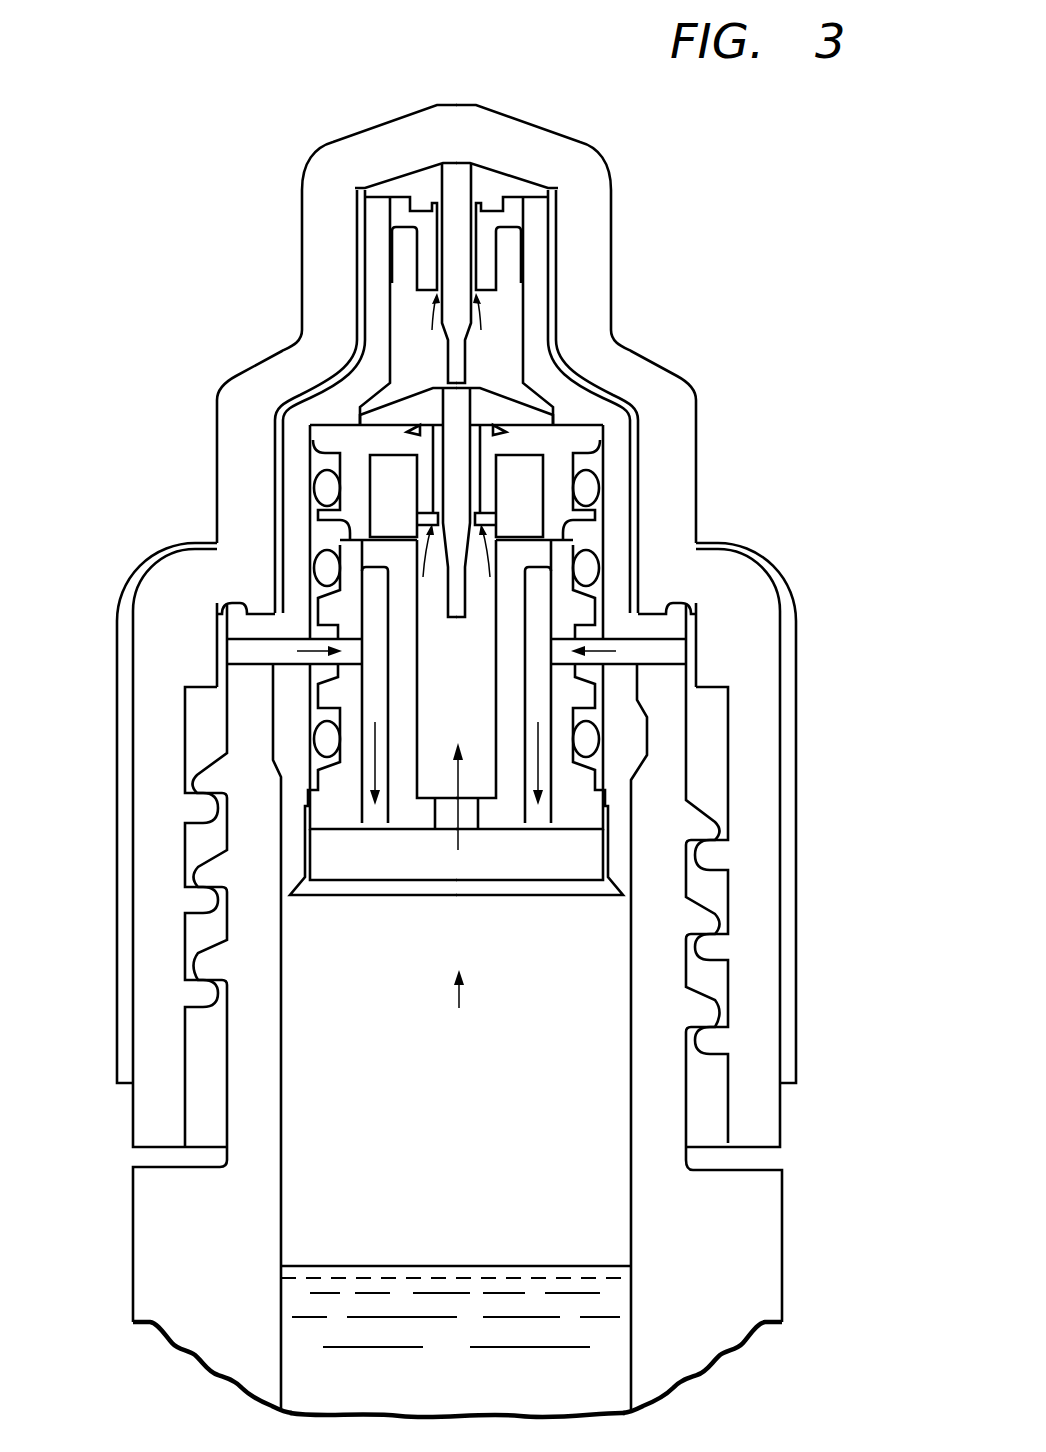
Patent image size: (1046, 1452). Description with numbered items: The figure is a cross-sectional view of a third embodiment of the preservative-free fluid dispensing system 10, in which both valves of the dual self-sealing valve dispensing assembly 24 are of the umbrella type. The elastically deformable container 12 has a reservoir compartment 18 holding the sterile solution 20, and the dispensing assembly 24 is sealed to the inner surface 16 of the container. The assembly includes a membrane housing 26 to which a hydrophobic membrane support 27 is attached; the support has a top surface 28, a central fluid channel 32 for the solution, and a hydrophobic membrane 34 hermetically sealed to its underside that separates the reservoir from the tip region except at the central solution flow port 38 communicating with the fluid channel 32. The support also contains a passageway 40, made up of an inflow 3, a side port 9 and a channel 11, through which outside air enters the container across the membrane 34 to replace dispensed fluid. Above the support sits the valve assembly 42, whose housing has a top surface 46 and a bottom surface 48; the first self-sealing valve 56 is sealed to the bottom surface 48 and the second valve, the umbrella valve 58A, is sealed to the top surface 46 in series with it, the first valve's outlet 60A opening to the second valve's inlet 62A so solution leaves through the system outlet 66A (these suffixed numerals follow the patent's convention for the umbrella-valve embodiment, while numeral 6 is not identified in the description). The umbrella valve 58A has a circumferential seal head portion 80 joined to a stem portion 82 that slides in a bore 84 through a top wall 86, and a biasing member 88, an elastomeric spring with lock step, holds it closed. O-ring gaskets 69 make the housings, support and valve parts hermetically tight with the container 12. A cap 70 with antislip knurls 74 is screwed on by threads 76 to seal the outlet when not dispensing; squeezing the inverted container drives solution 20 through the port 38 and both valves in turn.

The inflow 3 is at (696, 655).
The outlet passage 6 is at (430, 320).
The side port 9 is at (245, 652).
The preservative-free fluid dispensing system 10 is at (222, 121).
The channel 11 is at (373, 688).
The container 12 is at (665, 1003).
The inner surface 16 is at (633, 1048).
The reservoir compartment 18 is at (160, 1280).
The sterile solution 20 is at (456, 1331).
The dual self-sealing valve dispensing assembly 24 is at (528, 402).
The membrane housing 26 is at (590, 787).
The hydrophobic membrane support 27 is at (317, 783).
The top surface 28 is at (350, 528).
The central fluid channel 32 is at (487, 622).
The hydrophobic membrane 34 is at (347, 832).
The central solution flow port 38 is at (443, 813).
The passageway 40 is at (705, 623).
The valve assembly 42 is at (387, 473).
The top surface 46 is at (400, 277).
The bottom surface 48 is at (598, 533).
The first self-sealing valve 56 is at (350, 488).
The umbrella valve 58A is at (469, 185).
The lower valve 60A is at (413, 430).
The upper chamber 62A is at (415, 338).
The upper valve flap 66A is at (427, 187).
The gasket 69 is at (585, 493).
The cap 70 is at (456, 103).
The antislip knurls 74 is at (797, 1060).
The threads 76 is at (200, 993).
The circumferential seal head portion 80 is at (393, 178).
The stem portion 82 is at (310, 213).
The bore 84 is at (540, 256).
The top wall 86 is at (545, 211).
The biasing member 88 is at (468, 355).